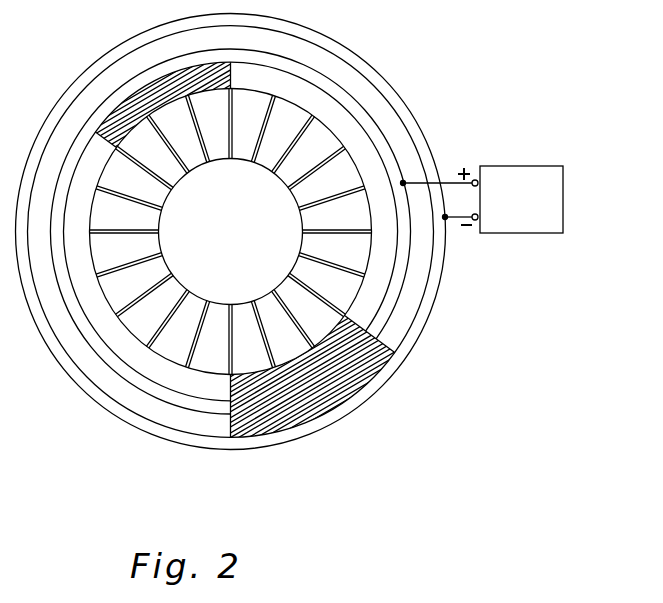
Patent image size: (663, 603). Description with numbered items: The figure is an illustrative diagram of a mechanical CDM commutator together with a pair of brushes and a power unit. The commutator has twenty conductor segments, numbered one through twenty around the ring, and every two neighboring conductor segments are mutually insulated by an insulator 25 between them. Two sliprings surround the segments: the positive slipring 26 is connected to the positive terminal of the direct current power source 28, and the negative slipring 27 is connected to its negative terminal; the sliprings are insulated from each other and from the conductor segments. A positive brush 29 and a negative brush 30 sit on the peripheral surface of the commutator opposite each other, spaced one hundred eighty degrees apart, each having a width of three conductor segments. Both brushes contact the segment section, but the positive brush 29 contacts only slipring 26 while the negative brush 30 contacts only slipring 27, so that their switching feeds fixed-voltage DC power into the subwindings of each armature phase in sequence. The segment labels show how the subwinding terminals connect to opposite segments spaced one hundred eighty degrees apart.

The insulator 25 is at (357, 288).
The positive slipring 26 is at (359, 115).
The negative slipring 27 is at (410, 132).
The direct current power source 28 is at (509, 235).
The positive brush 29 is at (127, 109).
The negative brush 30 is at (343, 387).